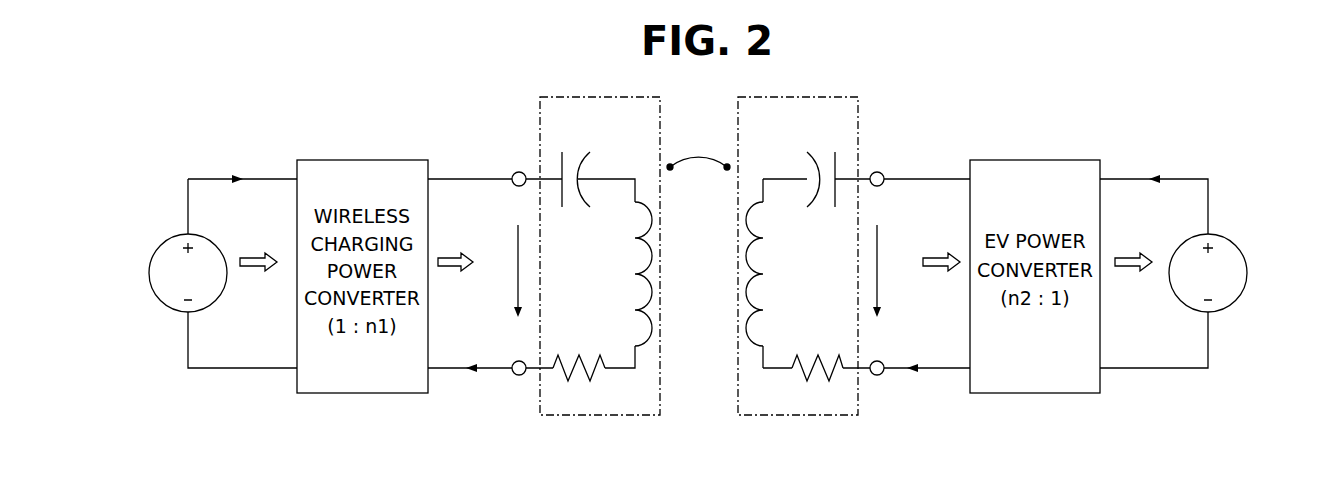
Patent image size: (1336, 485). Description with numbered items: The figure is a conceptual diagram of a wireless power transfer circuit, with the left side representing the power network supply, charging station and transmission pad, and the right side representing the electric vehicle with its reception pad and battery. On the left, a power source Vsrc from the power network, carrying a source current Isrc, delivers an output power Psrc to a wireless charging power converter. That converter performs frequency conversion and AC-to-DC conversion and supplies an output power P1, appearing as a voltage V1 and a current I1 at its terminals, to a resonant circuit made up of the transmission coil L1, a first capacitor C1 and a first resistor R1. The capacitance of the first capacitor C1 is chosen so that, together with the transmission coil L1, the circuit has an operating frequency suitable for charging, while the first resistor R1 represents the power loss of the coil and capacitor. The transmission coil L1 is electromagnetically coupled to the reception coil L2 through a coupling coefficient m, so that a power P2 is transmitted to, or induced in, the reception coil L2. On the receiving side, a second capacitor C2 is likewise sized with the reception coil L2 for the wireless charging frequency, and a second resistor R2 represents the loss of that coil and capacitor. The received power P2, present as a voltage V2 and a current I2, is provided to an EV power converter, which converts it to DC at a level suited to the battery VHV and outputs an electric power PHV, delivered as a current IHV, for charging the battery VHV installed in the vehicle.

The power source Vsrc is at (167, 273).
The source current Isrc is at (243, 165).
The output power Psrc is at (257, 247).
The output power P1 is at (455, 246).
The primary side voltage V1 is at (508, 271).
The primary side current I1 is at (474, 355).
The first capacitor C1 is at (576, 163).
The transmission coil L1 is at (631, 274).
The first resistor R1 is at (579, 352).
The coupling coefficient m is at (698, 149).
The second capacitor C2 is at (821, 163).
The reception coil L2 is at (769, 274).
The second resistor R2 is at (817, 352).
The secondary side voltage V2 is at (889, 271).
The secondary side current I2 is at (914, 355).
The power P2 is at (941, 247).
The electric power PHV is at (1131, 247).
The high voltage output current IHV is at (1156, 164).
The battery VHV is at (1232, 273).